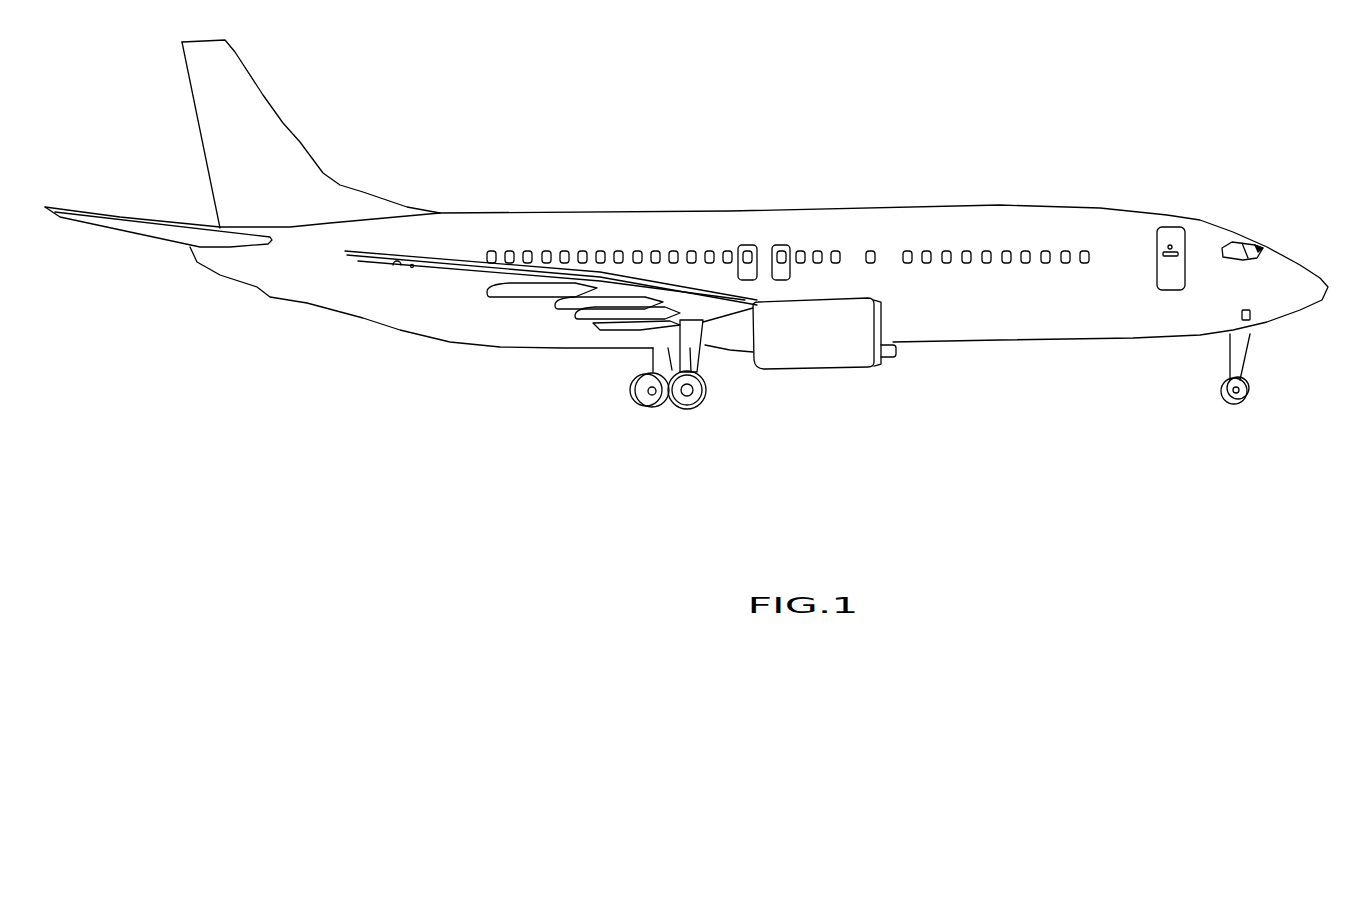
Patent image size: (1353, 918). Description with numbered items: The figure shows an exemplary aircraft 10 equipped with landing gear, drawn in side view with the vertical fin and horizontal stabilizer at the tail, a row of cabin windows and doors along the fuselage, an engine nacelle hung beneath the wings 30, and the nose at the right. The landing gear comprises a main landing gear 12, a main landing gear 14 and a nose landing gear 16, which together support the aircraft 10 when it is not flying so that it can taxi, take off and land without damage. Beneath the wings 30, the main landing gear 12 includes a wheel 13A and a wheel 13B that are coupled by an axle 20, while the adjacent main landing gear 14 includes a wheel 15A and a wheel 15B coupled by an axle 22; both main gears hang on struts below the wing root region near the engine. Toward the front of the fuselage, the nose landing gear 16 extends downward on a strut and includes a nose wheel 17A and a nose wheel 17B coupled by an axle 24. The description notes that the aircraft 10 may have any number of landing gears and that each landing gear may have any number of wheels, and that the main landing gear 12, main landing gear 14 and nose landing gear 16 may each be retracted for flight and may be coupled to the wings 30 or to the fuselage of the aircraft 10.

The aircraft 10 is at (875, 102).
The main landing gear 12 is at (641, 365).
The wheel 13A is at (640, 372).
The wheel 13B is at (645, 408).
The main landing gear 14 is at (713, 403).
The wheel 15A is at (705, 388).
The wheel 15B is at (667, 410).
The nose landing gear 16 is at (1267, 375).
The nose wheel 17A is at (1220, 393).
The nose wheel 17B is at (1250, 390).
The axle 20 is at (647, 403).
The axle 22 is at (689, 397).
The axle 24 is at (1238, 397).
The wings 30 is at (745, 308).